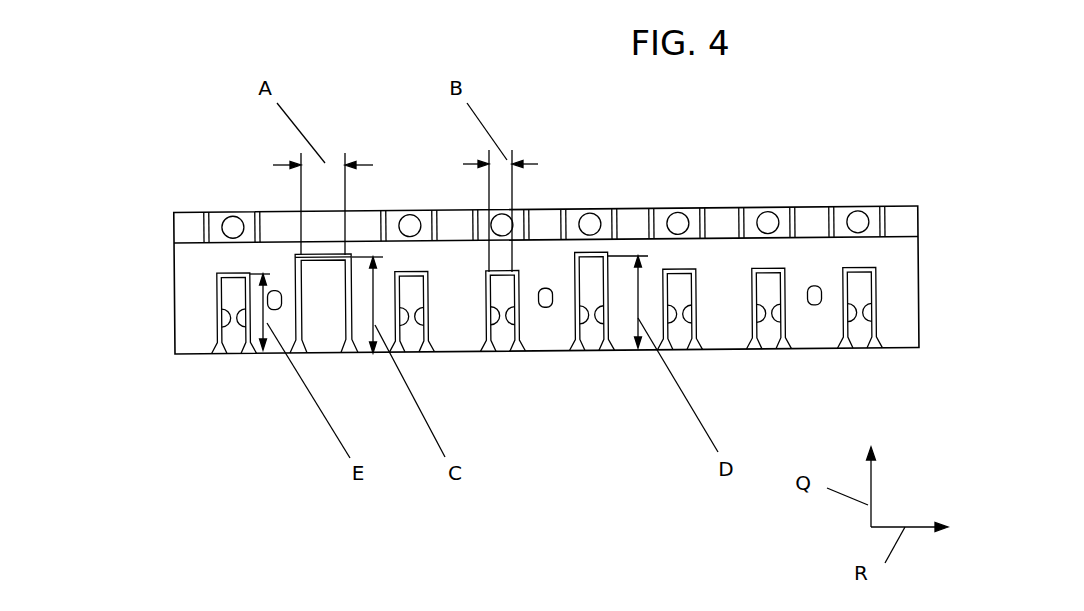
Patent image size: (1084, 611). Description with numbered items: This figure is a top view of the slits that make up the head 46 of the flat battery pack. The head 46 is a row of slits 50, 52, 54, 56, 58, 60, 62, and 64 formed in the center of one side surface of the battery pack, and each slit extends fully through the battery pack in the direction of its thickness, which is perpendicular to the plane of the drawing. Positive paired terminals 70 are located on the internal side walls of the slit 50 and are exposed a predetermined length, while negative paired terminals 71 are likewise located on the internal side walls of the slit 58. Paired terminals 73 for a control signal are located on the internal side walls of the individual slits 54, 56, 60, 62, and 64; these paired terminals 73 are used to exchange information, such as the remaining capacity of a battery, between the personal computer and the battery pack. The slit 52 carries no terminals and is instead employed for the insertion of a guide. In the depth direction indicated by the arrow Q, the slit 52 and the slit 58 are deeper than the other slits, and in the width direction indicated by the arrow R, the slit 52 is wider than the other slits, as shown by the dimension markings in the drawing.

The head 46 is at (503, 469).
The slit 50 is at (243, 362).
The slit 52 is at (329, 362).
The slit 54 is at (422, 362).
The slit 56 is at (511, 362).
The slit 58 is at (599, 362).
The slit 60 is at (689, 360).
The slit 62 is at (778, 359).
The slit 64 is at (869, 358).
The positive paired terminals 70 is at (243, 327).
The negative paired terminals 71 is at (580, 316).
The paired terminals for a control signal 73 is at (489, 318).